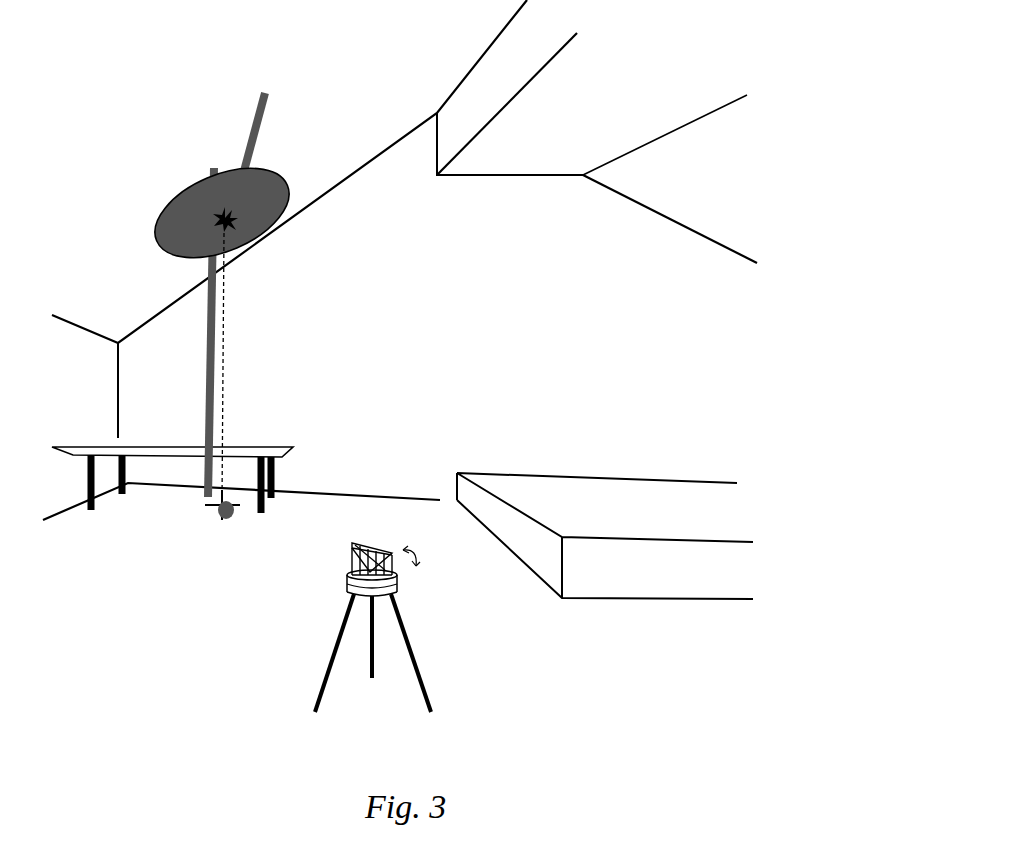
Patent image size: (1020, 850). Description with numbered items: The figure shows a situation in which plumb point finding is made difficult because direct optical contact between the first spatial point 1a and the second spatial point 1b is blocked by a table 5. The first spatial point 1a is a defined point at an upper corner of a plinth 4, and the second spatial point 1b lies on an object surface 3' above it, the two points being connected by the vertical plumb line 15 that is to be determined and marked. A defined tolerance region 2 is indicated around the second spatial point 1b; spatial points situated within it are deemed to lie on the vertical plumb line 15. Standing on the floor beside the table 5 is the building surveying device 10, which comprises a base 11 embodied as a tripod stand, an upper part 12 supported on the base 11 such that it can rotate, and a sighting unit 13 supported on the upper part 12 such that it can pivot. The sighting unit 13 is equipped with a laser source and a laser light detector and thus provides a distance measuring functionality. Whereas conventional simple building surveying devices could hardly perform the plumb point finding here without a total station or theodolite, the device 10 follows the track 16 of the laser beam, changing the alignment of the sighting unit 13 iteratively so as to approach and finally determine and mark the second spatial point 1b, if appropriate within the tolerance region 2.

The first spatial point 1a is at (218, 513).
The second spatial point 1b is at (229, 223).
The tolerance region 2 is at (197, 205).
The object surface 3' is at (404, 219).
The plinth 4 is at (595, 582).
The table 5 is at (243, 448).
The building surveying device 10 is at (348, 605).
The base 11 is at (350, 593).
The upper part 12 is at (337, 562).
The sighting unit 13 is at (360, 540).
The vertical plumb line 15 is at (223, 358).
The track of the laser beam 16 is at (205, 387).